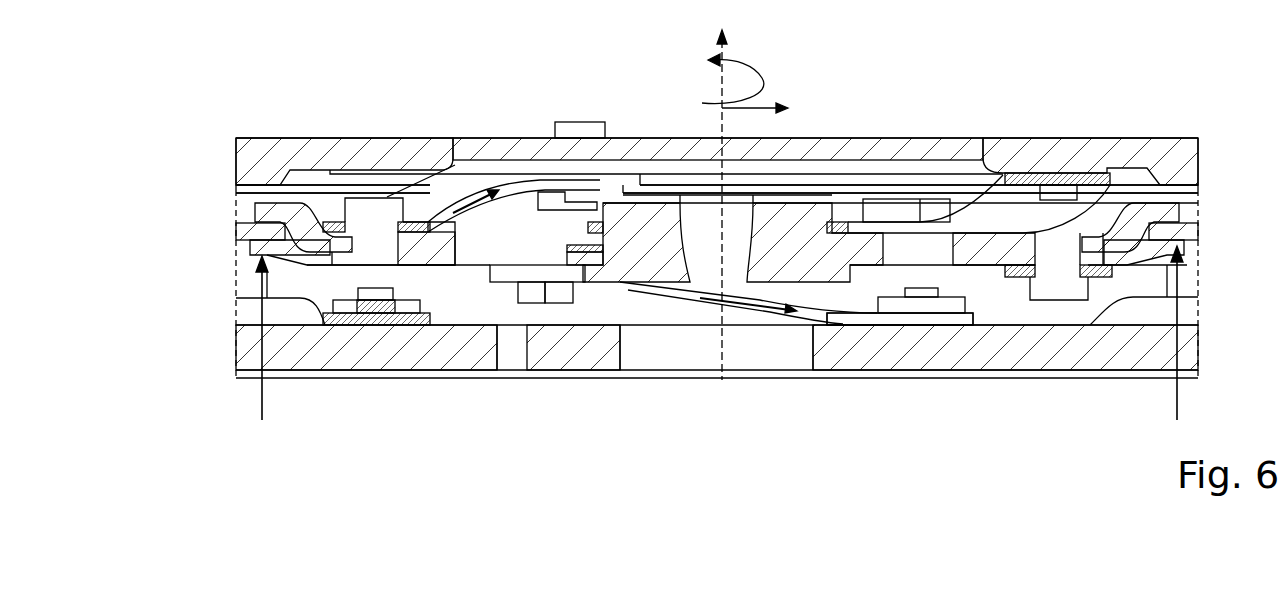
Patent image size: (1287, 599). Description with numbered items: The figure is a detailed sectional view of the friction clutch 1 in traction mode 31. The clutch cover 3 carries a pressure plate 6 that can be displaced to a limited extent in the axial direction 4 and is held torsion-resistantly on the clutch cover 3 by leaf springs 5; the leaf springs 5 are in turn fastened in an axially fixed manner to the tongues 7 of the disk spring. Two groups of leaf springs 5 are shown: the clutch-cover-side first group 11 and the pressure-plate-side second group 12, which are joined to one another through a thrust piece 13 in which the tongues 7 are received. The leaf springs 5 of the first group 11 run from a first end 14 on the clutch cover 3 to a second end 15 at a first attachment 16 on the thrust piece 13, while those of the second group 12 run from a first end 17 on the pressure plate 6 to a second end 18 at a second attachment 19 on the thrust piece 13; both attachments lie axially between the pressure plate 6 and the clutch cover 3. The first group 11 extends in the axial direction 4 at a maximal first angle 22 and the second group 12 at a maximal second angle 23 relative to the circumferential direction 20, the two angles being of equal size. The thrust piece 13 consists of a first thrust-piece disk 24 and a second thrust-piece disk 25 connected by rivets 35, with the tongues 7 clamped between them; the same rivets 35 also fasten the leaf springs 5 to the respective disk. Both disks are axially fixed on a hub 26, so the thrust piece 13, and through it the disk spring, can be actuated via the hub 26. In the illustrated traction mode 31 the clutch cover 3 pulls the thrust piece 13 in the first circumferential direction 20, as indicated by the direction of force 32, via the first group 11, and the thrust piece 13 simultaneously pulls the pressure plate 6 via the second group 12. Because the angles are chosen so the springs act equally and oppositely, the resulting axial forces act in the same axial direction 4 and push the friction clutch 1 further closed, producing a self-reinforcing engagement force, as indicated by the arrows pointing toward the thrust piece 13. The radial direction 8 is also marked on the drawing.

The friction clutch 1 is at (1107, 90).
The clutch cover 3 is at (322, 362).
The axial direction 4 is at (719, 191).
The leaf springs 5 is at (452, 150).
The pressure plate 6 is at (270, 165).
The tongues 7 is at (242, 231).
The radial direction 8 is at (764, 110).
The first group 11 is at (893, 320).
The second group 12 is at (957, 192).
The thrust piece 13 is at (858, 222).
The first end 14 is at (955, 310).
The second end 15 is at (520, 300).
The first attachment 16 is at (553, 285).
The first end 17 is at (1062, 172).
The second end 18 is at (338, 222).
The second attachment 19 is at (408, 195).
The first circumferential direction 20 is at (749, 78).
The first angle 22 is at (826, 316).
The second angle 23 is at (478, 180).
The first thrust-piece disk 24 is at (585, 276).
The second thrust-piece disk 25 is at (578, 205).
The hub 26 is at (640, 262).
The traction mode 31 is at (1145, 117).
The direction of force 32 is at (518, 192).
The rivets 35 is at (368, 225).